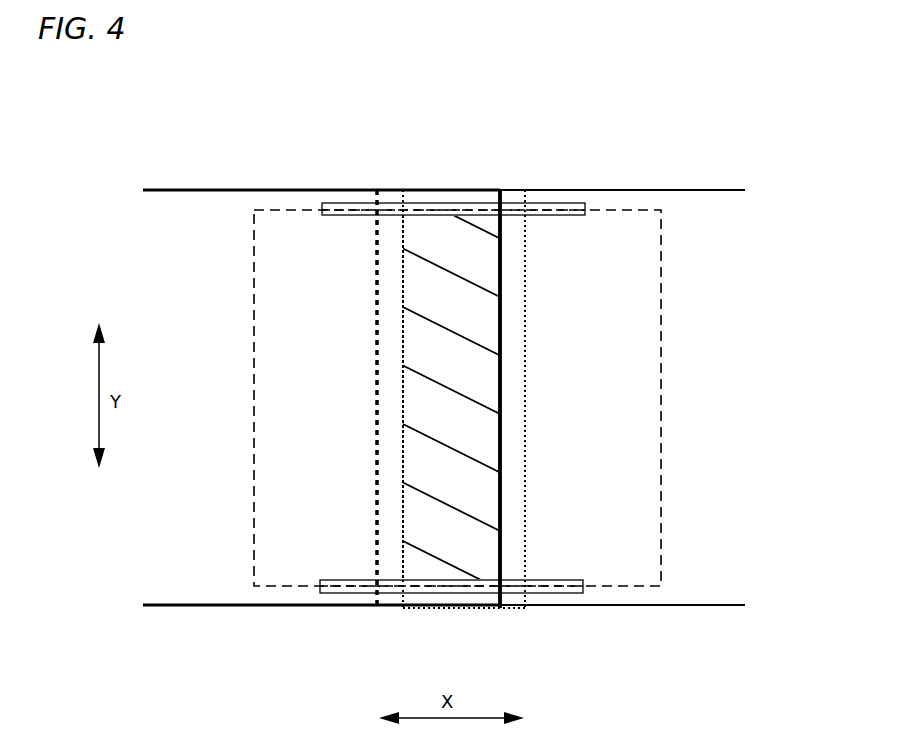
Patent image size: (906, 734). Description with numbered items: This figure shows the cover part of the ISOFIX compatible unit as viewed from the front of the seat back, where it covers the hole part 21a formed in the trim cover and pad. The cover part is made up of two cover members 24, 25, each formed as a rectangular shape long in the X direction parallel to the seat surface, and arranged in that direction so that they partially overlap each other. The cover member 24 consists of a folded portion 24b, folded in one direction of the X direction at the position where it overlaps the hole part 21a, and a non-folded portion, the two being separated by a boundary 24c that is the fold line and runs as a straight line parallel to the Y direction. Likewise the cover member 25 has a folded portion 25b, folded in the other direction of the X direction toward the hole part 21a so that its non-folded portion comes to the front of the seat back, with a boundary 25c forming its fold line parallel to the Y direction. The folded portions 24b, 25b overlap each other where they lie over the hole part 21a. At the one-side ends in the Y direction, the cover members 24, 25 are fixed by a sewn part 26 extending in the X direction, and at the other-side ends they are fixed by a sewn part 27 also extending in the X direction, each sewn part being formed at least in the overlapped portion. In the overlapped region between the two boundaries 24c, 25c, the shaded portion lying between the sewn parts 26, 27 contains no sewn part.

The hole part 21a is at (661, 236).
The cover member 24 is at (675, 189).
The folded portion 24b is at (523, 620).
The boundary 24c is at (403, 492).
The cover member 25 is at (222, 189).
The folded portion 25b is at (500, 186).
The boundary 25c is at (500, 515).
The sewn part 26 is at (556, 203).
The sewn part 27 is at (552, 594).